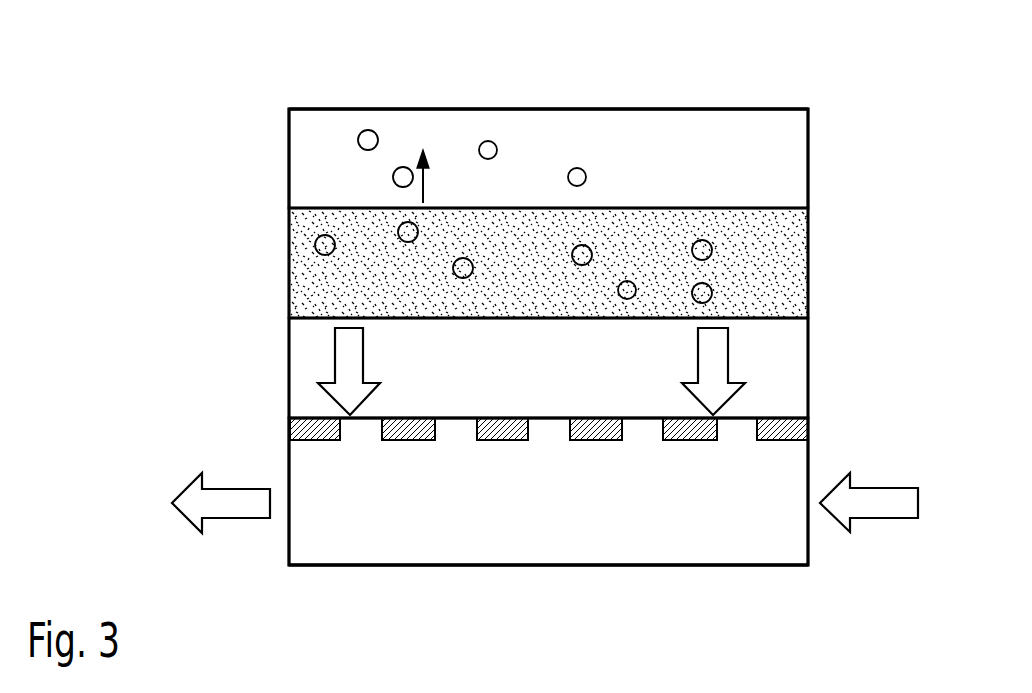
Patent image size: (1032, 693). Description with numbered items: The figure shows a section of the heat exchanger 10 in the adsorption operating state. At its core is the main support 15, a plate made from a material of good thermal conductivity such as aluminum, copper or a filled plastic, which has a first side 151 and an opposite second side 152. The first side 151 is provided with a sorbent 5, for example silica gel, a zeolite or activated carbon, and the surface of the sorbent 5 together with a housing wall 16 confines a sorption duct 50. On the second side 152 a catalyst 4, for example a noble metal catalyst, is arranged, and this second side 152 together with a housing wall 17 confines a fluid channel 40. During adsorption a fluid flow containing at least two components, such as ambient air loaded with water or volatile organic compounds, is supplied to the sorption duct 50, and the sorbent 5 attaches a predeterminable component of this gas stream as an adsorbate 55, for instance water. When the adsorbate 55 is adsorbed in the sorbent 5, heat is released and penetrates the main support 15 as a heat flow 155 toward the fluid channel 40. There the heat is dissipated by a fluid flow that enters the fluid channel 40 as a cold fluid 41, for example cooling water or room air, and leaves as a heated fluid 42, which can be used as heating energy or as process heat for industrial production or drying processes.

The heat exchanger 10 is at (193, 182).
The housing wall 16 is at (668, 107).
The sorption duct 50 is at (793, 158).
The adsorbate 55 is at (368, 130).
The sorbent 5 is at (797, 243).
The first side 151 is at (793, 310).
The main support 15 is at (792, 372).
The heat flow 155 is at (345, 360).
The second side 152 is at (290, 432).
The catalyst 4 is at (810, 428).
The fluid channel 40 is at (792, 550).
The housing wall 17 is at (493, 567).
The cold fluid 41 is at (893, 488).
The heated fluid 42 is at (228, 520).